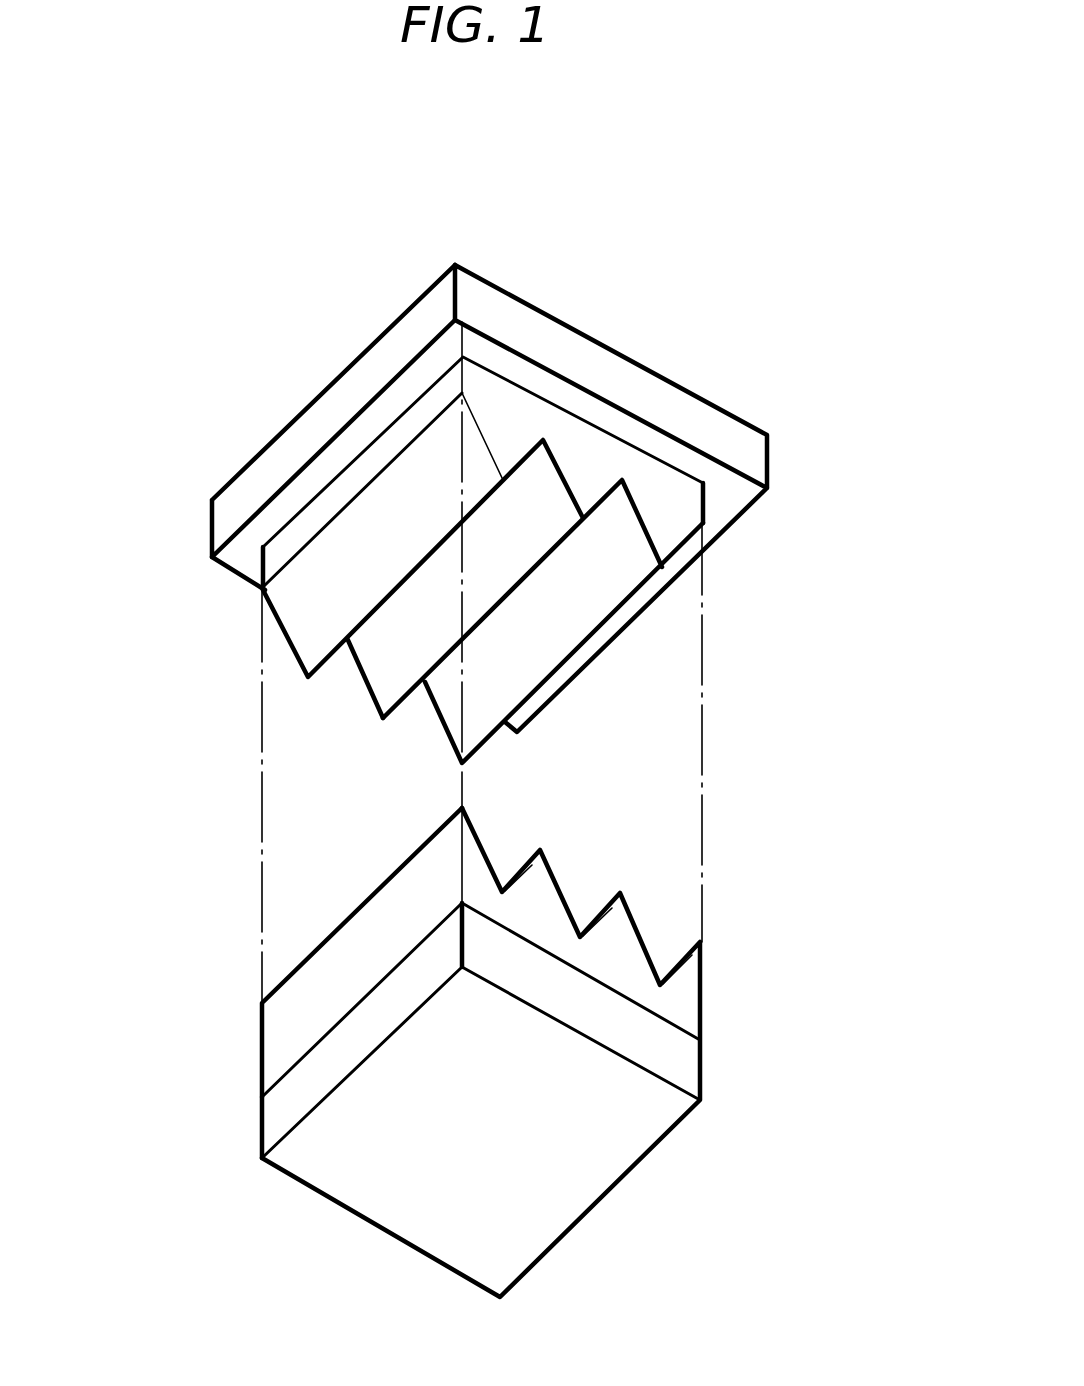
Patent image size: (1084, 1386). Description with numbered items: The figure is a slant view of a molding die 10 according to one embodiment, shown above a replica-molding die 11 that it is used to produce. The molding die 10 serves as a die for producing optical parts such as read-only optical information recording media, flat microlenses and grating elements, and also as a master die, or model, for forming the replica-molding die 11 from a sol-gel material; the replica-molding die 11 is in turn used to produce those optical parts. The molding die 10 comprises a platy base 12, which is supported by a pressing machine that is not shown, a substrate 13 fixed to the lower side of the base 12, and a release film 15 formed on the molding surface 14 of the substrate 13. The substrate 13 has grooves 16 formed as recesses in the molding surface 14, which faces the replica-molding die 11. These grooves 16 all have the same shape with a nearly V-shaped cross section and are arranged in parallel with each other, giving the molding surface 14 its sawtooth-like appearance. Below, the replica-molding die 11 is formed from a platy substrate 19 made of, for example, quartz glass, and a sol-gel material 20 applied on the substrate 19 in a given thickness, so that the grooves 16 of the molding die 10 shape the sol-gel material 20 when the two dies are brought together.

The molding die 10 is at (845, 503).
The replica-molding die 11 is at (790, 1053).
The platy base 12 is at (287, 447).
The substrate 13 is at (284, 546).
The molding surface 14 is at (320, 712).
The release film 15 is at (550, 633).
The grooves 16 is at (530, 443).
The platy substrate 19 is at (318, 1065).
The sol-gel material 20 is at (319, 984).